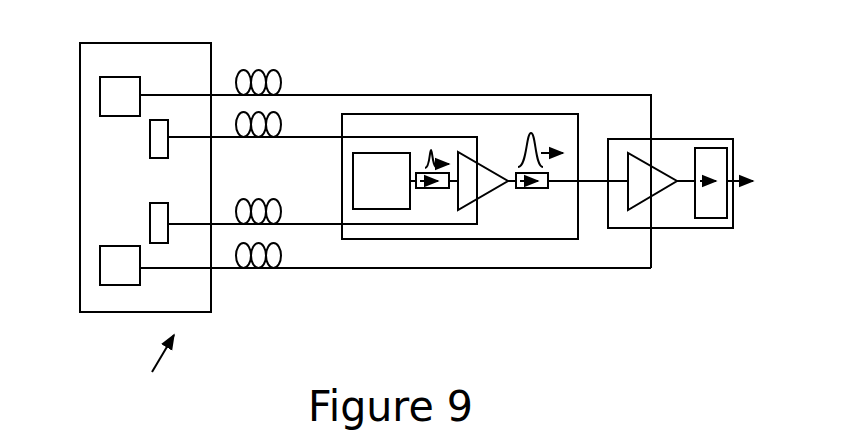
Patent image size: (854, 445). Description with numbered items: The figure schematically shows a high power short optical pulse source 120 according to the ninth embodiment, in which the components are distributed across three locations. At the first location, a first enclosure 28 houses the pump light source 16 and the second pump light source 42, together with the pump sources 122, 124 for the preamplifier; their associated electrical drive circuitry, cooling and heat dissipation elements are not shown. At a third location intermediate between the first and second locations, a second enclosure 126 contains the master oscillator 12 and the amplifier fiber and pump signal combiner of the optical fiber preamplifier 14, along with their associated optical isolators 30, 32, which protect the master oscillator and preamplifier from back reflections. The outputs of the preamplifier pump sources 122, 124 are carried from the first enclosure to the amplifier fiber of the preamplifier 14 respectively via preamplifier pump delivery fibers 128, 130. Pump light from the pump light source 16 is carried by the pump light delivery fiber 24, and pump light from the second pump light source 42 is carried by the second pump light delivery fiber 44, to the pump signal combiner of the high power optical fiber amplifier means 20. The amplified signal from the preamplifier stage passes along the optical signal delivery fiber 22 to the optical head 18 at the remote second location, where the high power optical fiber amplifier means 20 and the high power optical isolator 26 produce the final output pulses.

The master oscillator 12 is at (378, 178).
The preamplifier 14 is at (475, 183).
The pump light source 16 is at (120, 97).
The optical head 18 is at (705, 229).
The high power optical fiber amplifier means 20 is at (648, 180).
The optical signal delivery fiber 22 is at (594, 185).
The pump light delivery fiber 24 is at (403, 94).
The high power optical isolator 26 is at (713, 148).
The first enclosure 28 is at (105, 312).
The optical isolator 30 is at (430, 189).
The optical isolator 32 is at (533, 189).
The second pump light source 42 is at (116, 267).
The second pump light delivery fiber 44 is at (352, 269).
The high power short optical pulse source 120 is at (152, 368).
The preamplifier pump source 122 is at (158, 138).
The preamplifier pump source 124 is at (158, 222).
The second enclosure 126 is at (508, 113).
The preamplifier pump delivery fiber 128 is at (300, 135).
The preamplifier pump delivery fiber 130 is at (300, 225).